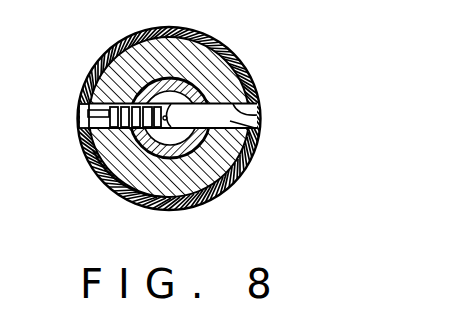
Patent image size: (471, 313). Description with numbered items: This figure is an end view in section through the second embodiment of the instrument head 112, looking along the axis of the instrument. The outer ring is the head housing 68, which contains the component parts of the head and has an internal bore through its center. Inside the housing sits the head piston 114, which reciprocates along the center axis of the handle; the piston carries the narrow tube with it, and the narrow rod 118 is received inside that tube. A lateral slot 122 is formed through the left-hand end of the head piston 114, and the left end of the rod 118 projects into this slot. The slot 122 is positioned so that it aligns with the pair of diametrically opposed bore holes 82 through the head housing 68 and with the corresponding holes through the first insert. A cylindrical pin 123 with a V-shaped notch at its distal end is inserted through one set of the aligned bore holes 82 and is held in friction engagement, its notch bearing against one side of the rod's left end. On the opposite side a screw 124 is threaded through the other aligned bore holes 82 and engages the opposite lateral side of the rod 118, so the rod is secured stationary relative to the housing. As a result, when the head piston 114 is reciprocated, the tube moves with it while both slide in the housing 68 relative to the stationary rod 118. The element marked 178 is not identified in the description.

The head housing 68 is at (216, 191).
The instrument head 112 is at (233, 78).
The head piston 114 is at (184, 84).
The narrow rod 118 is at (108, 182).
The lateral slot 122 is at (115, 86).
The bore holes 82 is at (88, 112).
The screw 124 is at (90, 125).
The band end 178 is at (243, 117).
The cylindrical pin 123 is at (256, 134).